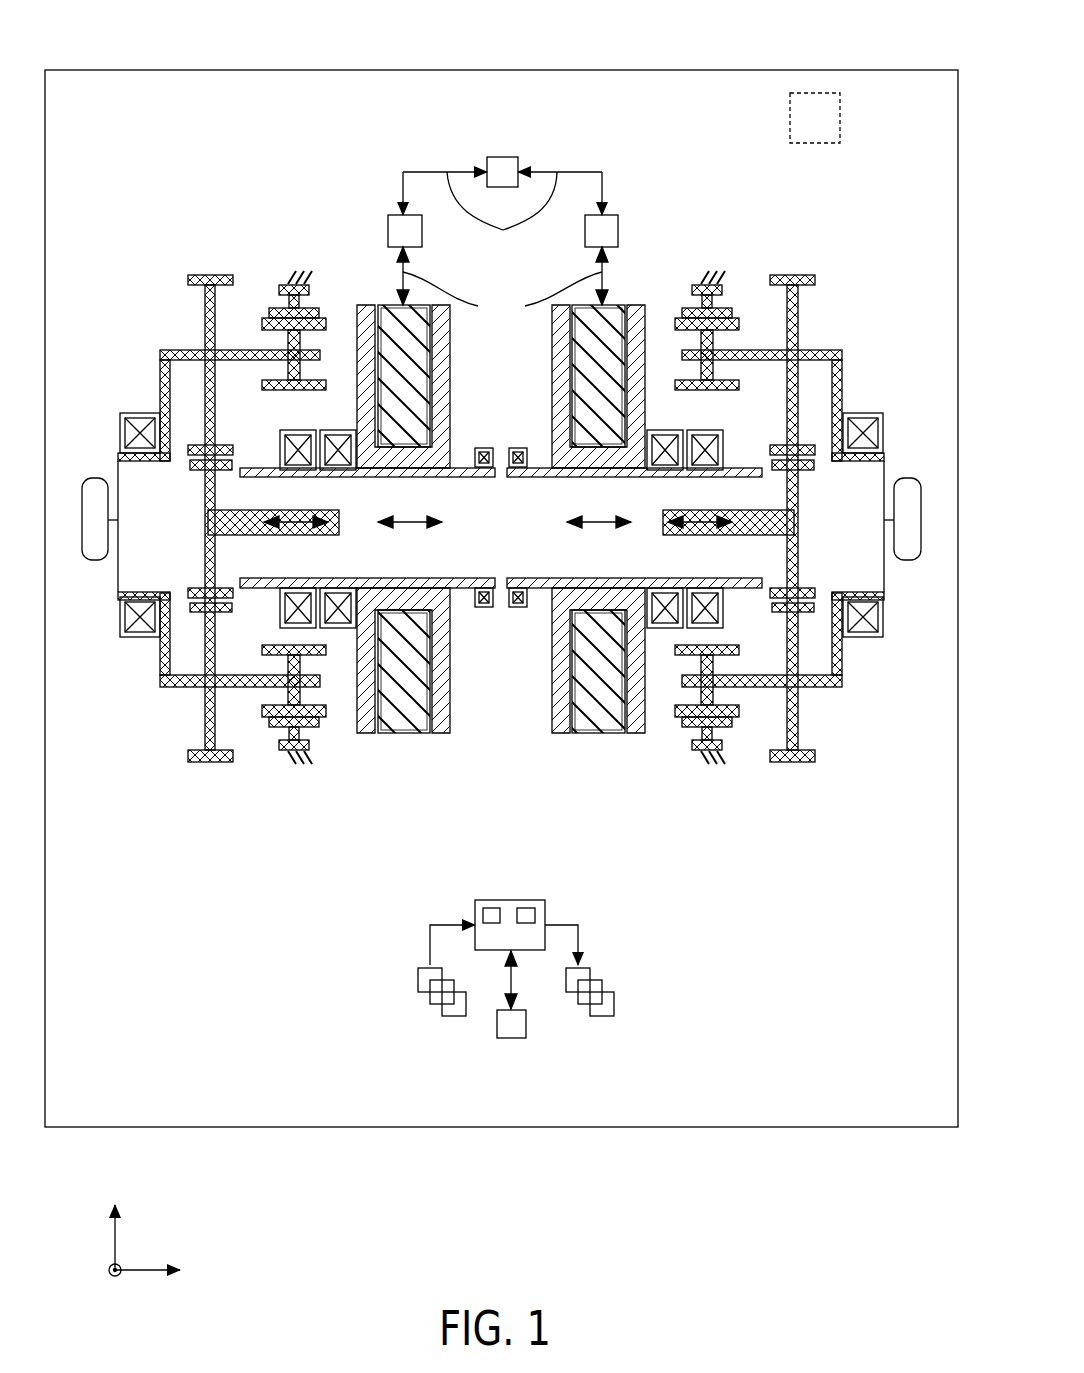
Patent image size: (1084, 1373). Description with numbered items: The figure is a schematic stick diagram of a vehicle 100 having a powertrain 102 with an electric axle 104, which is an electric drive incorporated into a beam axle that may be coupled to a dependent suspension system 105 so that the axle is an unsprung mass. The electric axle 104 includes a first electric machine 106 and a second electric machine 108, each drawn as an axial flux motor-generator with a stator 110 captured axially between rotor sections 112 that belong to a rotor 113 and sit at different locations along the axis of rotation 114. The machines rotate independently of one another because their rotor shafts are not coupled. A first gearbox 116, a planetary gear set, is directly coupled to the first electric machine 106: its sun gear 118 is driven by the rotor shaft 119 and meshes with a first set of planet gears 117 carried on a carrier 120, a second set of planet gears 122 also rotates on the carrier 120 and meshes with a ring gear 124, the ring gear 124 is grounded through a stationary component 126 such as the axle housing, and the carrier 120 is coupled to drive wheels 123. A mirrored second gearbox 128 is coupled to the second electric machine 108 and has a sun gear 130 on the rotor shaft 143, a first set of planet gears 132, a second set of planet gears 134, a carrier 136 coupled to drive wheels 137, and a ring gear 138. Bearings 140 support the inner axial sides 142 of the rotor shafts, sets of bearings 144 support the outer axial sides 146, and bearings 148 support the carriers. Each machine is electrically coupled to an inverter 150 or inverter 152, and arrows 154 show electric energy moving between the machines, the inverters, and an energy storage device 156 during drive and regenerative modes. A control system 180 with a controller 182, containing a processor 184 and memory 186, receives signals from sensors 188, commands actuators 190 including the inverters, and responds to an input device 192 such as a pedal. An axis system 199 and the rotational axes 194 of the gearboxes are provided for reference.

The vehicle 100 is at (116, 70).
The powertrain 102 is at (128, 172).
The electric axle 104 is at (240, 185).
The dependent suspension system 105 is at (790, 120).
The first electric machine 106 is at (490, 601).
The second electric machine 108 is at (606, 808).
The stator 110 is at (501, 555).
The rotor sections 112 is at (365, 735).
The rotor 113 is at (455, 712).
The axis of rotation 114 is at (410, 522).
The first gearbox 116 is at (301, 466).
The first set of planet gears 117 is at (215, 275).
The sun gear 118 is at (208, 508).
The rotor shaft 119 is at (392, 522).
The carrier 120 is at (177, 352).
The second set of planet gears 122 is at (292, 346).
The drive wheels 123 is at (95, 562).
The ring gear 124 is at (278, 312).
The stationary component 126 is at (308, 280).
The second gearbox 128 is at (712, 466).
The sun gear 130 is at (806, 465).
The first set of planet gears 132 is at (797, 275).
The second set of planet gears 134 is at (722, 328).
The carrier 136 is at (838, 352).
The drive wheels 137 is at (903, 560).
The ring gear 138 is at (690, 312).
The bearings 140 is at (518, 448).
The inner axial sides 142 is at (484, 608).
The rotor shaft 143 is at (574, 522).
The sets of bearings 144 is at (337, 432).
The outer axial sides 146 is at (265, 600).
The bearings 148 is at (132, 412).
The inverter 150 is at (388, 232).
The inverter 152 is at (618, 232).
The arrows 154 is at (502, 248).
The energy storage device 156 is at (505, 157).
The control system 180 is at (493, 895).
The controller 182 is at (513, 900).
The processor 184 is at (483, 918).
The memory 186 is at (535, 918).
The sensors 188 is at (408, 1015).
The actuators 190 is at (623, 1015).
The input device 192 is at (515, 1038).
The rotational axes 194 is at (300, 522).
The axis system 199 is at (157, 1232).